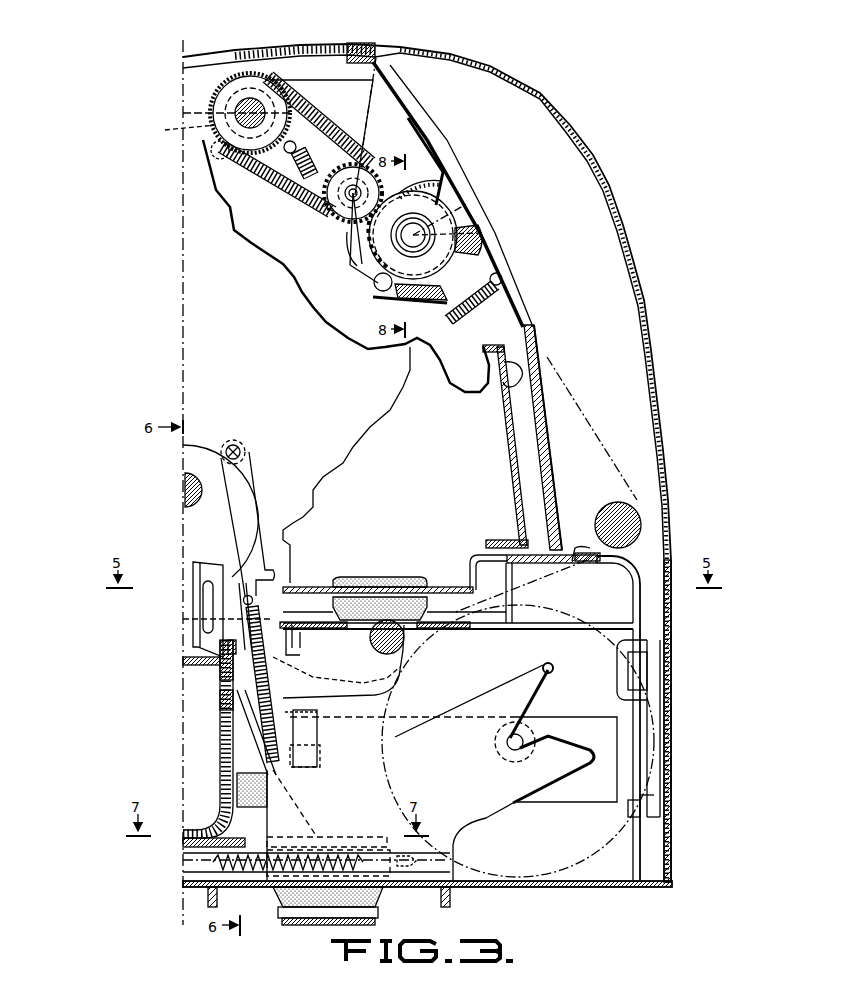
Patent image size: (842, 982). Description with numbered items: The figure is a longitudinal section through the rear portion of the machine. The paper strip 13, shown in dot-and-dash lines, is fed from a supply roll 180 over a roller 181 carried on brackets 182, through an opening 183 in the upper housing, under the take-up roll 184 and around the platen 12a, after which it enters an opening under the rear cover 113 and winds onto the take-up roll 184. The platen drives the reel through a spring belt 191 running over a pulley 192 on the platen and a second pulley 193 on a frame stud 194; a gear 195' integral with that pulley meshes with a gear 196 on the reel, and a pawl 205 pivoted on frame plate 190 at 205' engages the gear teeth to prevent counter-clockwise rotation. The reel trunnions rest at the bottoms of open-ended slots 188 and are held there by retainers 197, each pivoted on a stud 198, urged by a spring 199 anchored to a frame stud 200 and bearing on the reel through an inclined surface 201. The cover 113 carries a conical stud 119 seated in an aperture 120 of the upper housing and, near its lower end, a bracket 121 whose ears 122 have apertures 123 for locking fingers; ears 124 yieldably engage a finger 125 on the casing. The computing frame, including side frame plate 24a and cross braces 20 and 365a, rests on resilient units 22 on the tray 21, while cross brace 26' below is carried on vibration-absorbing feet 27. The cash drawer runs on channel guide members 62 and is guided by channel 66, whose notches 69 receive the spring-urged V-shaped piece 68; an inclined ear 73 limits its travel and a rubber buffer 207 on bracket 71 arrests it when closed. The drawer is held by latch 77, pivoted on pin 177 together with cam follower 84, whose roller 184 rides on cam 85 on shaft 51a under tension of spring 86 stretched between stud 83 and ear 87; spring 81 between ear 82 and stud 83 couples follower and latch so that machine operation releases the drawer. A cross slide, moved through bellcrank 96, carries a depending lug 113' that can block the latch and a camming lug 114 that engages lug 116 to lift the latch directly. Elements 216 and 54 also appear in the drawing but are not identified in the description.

The rear cover 113 is at (427, 473).
The conical stud 119 is at (372, 38).
The apertures 120 is at (385, 68).
The frame plate 190 is at (440, 152).
The open ended slots 188 is at (450, 166).
The opening 183 is at (530, 308).
The paper strip 13 is at (577, 395).
The pulley 192 is at (212, 102).
The platen 12a is at (180, 125).
The pawl 205 is at (296, 144).
The pawl pivot 205' is at (344, 105).
The belt tensioner 216 is at (298, 161).
The spring belt 191 is at (346, 266).
The second pulley 193 is at (348, 212).
The gear 195' is at (313, 209).
The frame stud 194 is at (362, 228).
The second gear 196 is at (370, 281).
The inclined surface 201 is at (477, 216).
The take-up roll 184 is at (472, 200).
The retainers 197 is at (482, 240).
The pivot stud 198 is at (376, 291).
The spring 199 is at (469, 310).
The frame stud 200 is at (503, 281).
The cross brace 20 is at (500, 476).
The main side frame plate 24a is at (360, 437).
The cam 85 is at (205, 443).
The shaft 51a is at (183, 491).
The cam follower 84 is at (287, 540).
The latch 77 is at (193, 598).
The bellcrank 96 is at (190, 620).
The stud 83 is at (253, 600).
The spring 86 is at (275, 684).
The camming lug 114 is at (336, 670).
The depending lug 113' is at (352, 638).
The lug 116 is at (312, 650).
The pin 177 is at (398, 667).
The resilient supporting units 22 is at (380, 577).
The cross brace 365a is at (466, 585).
The roller 181 is at (613, 503).
The brackets 182 is at (590, 547).
The supply roll 180 is at (572, 624).
The tray 21 is at (558, 596).
The channel guide members 62 is at (595, 716).
The bracket 71 is at (484, 808).
The ears 122 is at (650, 656).
The apertures 123 is at (622, 689).
The bracket 121 is at (662, 736).
The ears 124 is at (628, 812).
The finger 125 is at (655, 794).
The housing wall 54 is at (207, 736).
The spring 81 is at (221, 680).
The ear 82 is at (226, 702).
The rubber buffer 207 is at (240, 784).
The inclined ear 73 is at (288, 716).
The ear 87 is at (302, 775).
The notches 69 is at (400, 805).
The guide channel 66 is at (183, 858).
The V-shaped floating cross piece 68 is at (417, 861).
The feet 27 is at (380, 900).
The cross brace 26' is at (463, 900).